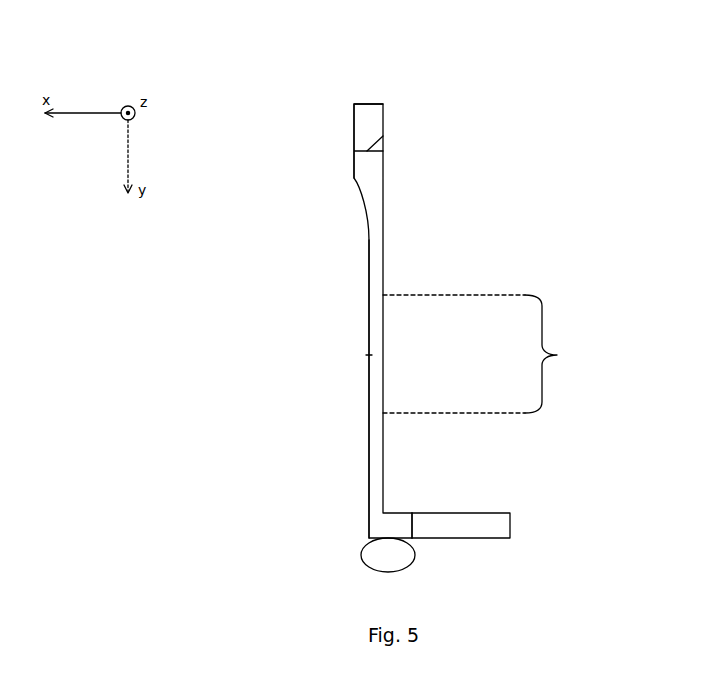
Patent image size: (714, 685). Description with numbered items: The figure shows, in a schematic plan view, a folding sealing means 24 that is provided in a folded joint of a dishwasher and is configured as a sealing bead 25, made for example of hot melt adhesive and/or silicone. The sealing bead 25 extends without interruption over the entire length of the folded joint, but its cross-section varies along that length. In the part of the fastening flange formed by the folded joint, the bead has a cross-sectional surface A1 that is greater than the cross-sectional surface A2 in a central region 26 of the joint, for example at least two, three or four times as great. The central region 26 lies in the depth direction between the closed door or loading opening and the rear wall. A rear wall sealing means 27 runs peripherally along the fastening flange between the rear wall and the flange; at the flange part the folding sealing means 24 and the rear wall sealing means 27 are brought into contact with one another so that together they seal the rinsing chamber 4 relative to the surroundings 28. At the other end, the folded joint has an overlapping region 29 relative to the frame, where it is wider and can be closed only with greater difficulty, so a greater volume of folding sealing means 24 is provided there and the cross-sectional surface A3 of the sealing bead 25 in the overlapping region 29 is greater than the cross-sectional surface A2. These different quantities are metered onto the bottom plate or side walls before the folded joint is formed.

The rinsing chamber 4 is at (255, 396).
The folding sealing means 24 is at (394, 289).
The sealing bead 25 is at (378, 239).
The central region 26 is at (489, 354).
The rear wall sealing means 27 is at (380, 553).
The surroundings 28 is at (645, 465).
The overlapping region 29 is at (343, 107).
The cross-sectional surface A1 is at (412, 528).
The cross-sectional surface A2 is at (369, 355).
The cross-sectional surface A3 is at (383, 136).